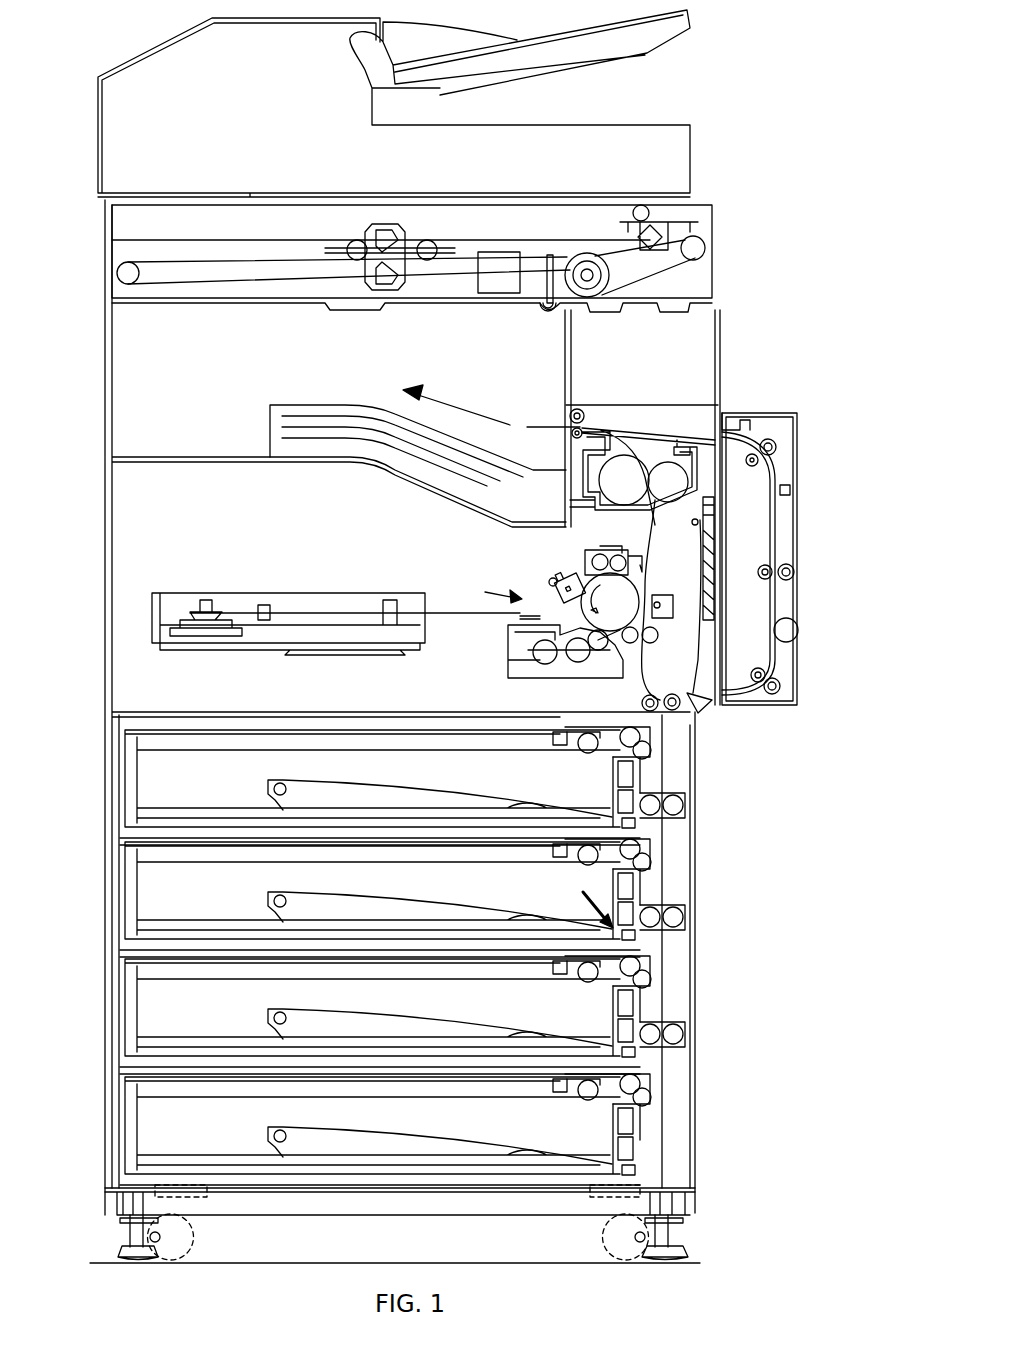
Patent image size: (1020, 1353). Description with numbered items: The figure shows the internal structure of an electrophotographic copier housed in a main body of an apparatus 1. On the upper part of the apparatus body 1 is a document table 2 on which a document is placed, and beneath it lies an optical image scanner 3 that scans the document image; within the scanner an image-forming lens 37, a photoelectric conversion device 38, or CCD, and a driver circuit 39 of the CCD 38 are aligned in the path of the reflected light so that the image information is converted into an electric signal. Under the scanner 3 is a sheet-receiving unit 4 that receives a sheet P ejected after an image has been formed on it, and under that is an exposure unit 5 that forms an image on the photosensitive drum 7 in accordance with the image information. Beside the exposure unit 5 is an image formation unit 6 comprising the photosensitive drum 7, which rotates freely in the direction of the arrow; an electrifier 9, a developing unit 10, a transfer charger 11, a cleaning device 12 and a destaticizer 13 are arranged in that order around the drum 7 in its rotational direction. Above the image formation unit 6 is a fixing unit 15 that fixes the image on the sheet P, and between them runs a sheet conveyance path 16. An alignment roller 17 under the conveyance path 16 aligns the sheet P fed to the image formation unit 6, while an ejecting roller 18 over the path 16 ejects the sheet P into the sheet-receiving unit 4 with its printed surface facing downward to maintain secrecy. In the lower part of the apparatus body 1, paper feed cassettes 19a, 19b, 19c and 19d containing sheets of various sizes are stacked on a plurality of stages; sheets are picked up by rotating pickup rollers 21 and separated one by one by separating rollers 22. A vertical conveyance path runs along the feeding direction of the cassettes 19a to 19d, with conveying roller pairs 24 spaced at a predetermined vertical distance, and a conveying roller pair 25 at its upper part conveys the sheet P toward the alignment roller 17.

The main body of apparatus 1 is at (100, 222).
The document table 2 is at (302, 194).
The optical image scanner 3 is at (718, 218).
The sheet-receiving unit 4 is at (405, 387).
The sheet P is at (268, 425).
The exposure unit 5 is at (234, 593).
The image formation unit 6 is at (487, 589).
The photosensitive drum 7 is at (635, 590).
The electrifier 9 is at (549, 583).
The developing unit 10 is at (629, 660).
The transfer charger 11 is at (673, 597).
The cleaning device 12 is at (720, 563).
The destaticizer 13 is at (561, 581).
The fixing unit 15 is at (682, 447).
The sheet conveyance path 16 is at (600, 554).
The alignment roller 17 is at (657, 632).
The ejecting roller 18 is at (578, 408).
The paper feed cassette 19a is at (144, 790).
The paper feed cassette 19b is at (144, 902).
The paper feed cassette 19c is at (144, 1019).
The paper feed cassette 19d is at (144, 1137).
The pickup roller 21 is at (580, 754).
The separating roller 22 is at (655, 750).
The conveying roller pair 24 is at (685, 805).
The conveying roller pair 25 is at (675, 687).
The image-forming lens 37 is at (500, 251).
The photoelectric conversion device 38 is at (548, 253).
The driver circuit 39 is at (542, 308).